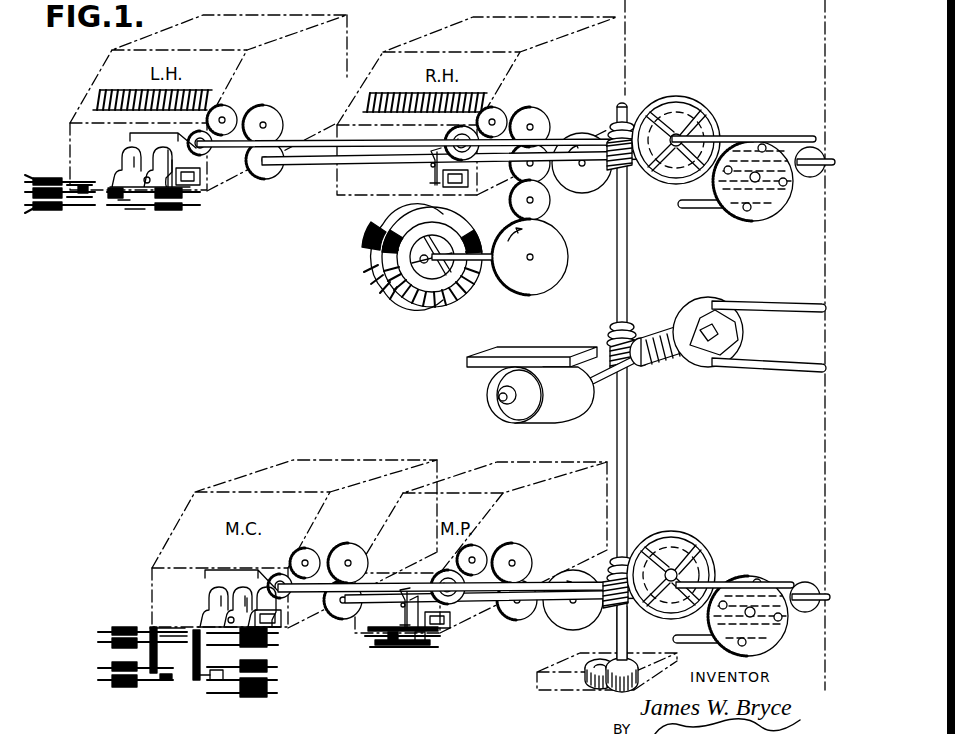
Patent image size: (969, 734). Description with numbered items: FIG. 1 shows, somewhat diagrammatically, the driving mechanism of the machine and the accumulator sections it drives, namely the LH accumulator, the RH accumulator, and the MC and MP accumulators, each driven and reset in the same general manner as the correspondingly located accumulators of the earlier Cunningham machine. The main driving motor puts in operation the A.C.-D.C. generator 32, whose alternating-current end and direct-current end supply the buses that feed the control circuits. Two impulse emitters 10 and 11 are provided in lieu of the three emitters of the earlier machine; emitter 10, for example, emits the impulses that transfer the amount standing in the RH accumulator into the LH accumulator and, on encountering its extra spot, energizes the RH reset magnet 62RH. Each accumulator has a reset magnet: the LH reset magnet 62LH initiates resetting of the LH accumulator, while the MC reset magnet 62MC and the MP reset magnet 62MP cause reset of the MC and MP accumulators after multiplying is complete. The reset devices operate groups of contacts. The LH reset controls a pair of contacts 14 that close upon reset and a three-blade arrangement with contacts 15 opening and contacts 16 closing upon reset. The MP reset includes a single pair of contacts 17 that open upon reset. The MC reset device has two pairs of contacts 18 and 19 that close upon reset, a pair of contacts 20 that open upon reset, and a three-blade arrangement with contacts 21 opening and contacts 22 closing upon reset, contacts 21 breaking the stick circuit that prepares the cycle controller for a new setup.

The impulse emitter 10 is at (444, 286).
The impulse emitter 11 is at (378, 286).
The contacts 14 is at (110, 200).
The contacts 15 is at (79, 184).
The contacts 16 is at (92, 205).
The contacts 17 is at (389, 649).
The contacts 18 is at (222, 648).
The contacts 19 is at (180, 676).
The contacts 20 is at (163, 628).
The contacts 21 is at (205, 682).
The contacts 22 is at (238, 695).
The A.C.-D.C. generator 32 is at (495, 383).
The LH reset magnet 62LH is at (200, 178).
The RH reset magnet 62RH is at (455, 180).
The MC reset magnet 62MC is at (276, 620).
The MP reset magnet 62MP is at (445, 620).